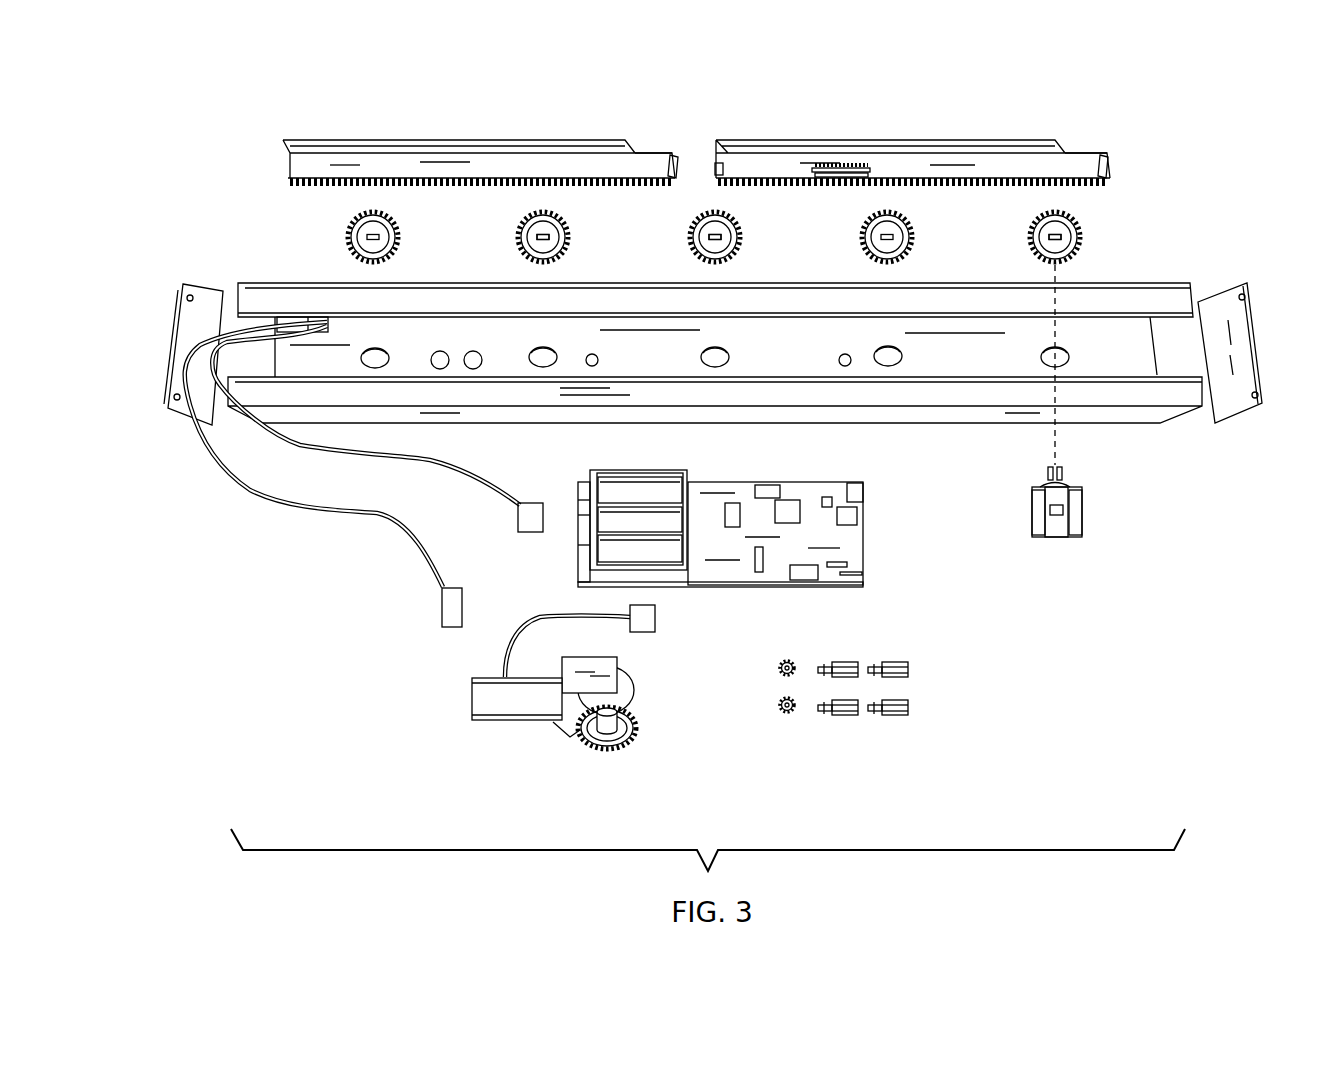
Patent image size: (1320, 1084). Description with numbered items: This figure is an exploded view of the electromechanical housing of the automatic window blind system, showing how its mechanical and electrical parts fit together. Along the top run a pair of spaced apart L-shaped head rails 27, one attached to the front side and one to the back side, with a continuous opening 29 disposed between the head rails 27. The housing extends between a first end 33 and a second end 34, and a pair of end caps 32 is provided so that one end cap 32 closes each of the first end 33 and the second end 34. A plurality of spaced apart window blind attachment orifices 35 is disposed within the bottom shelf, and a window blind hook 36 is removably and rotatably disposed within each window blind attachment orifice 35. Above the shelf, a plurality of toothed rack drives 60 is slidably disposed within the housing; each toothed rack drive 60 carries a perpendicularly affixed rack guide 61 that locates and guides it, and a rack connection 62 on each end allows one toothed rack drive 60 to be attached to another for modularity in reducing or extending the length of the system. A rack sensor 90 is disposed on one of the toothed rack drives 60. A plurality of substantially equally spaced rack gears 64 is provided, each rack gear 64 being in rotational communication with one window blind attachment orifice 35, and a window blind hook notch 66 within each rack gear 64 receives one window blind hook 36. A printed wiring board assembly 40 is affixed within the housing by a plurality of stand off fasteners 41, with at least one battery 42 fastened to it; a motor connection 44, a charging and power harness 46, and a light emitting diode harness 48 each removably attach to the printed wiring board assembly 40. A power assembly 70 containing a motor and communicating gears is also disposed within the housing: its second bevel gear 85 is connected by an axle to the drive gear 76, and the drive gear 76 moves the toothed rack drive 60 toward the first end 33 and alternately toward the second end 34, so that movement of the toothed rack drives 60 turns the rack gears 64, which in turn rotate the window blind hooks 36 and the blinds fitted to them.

The head rail 27 is at (1150, 293).
The continuous opening 29 is at (1178, 355).
The end cap 32 is at (203, 303).
The first end 33 is at (232, 298).
The second end 34 is at (1193, 290).
The window blind attachment orifice 35 is at (375, 348).
The window blind hook 36 is at (1057, 537).
The printed wiring board assembly 40 is at (866, 540).
The stand off fastener 41 is at (893, 662).
The battery 42 is at (640, 500).
The motor connection 44 is at (656, 618).
The charging and power harness 46 is at (442, 605).
The light emitting diode harness 48 is at (527, 533).
The toothed rack drive 60 is at (648, 163).
The rack guide 61 is at (503, 143).
The rack connection 62 is at (674, 168).
The rack gear 64 is at (347, 237).
The window blind hook notch 66 is at (548, 240).
The power assembly 70 is at (563, 672).
The drive gear 76 is at (633, 728).
The second bevel gear 85 is at (622, 682).
The rack sensor 90 is at (826, 163).